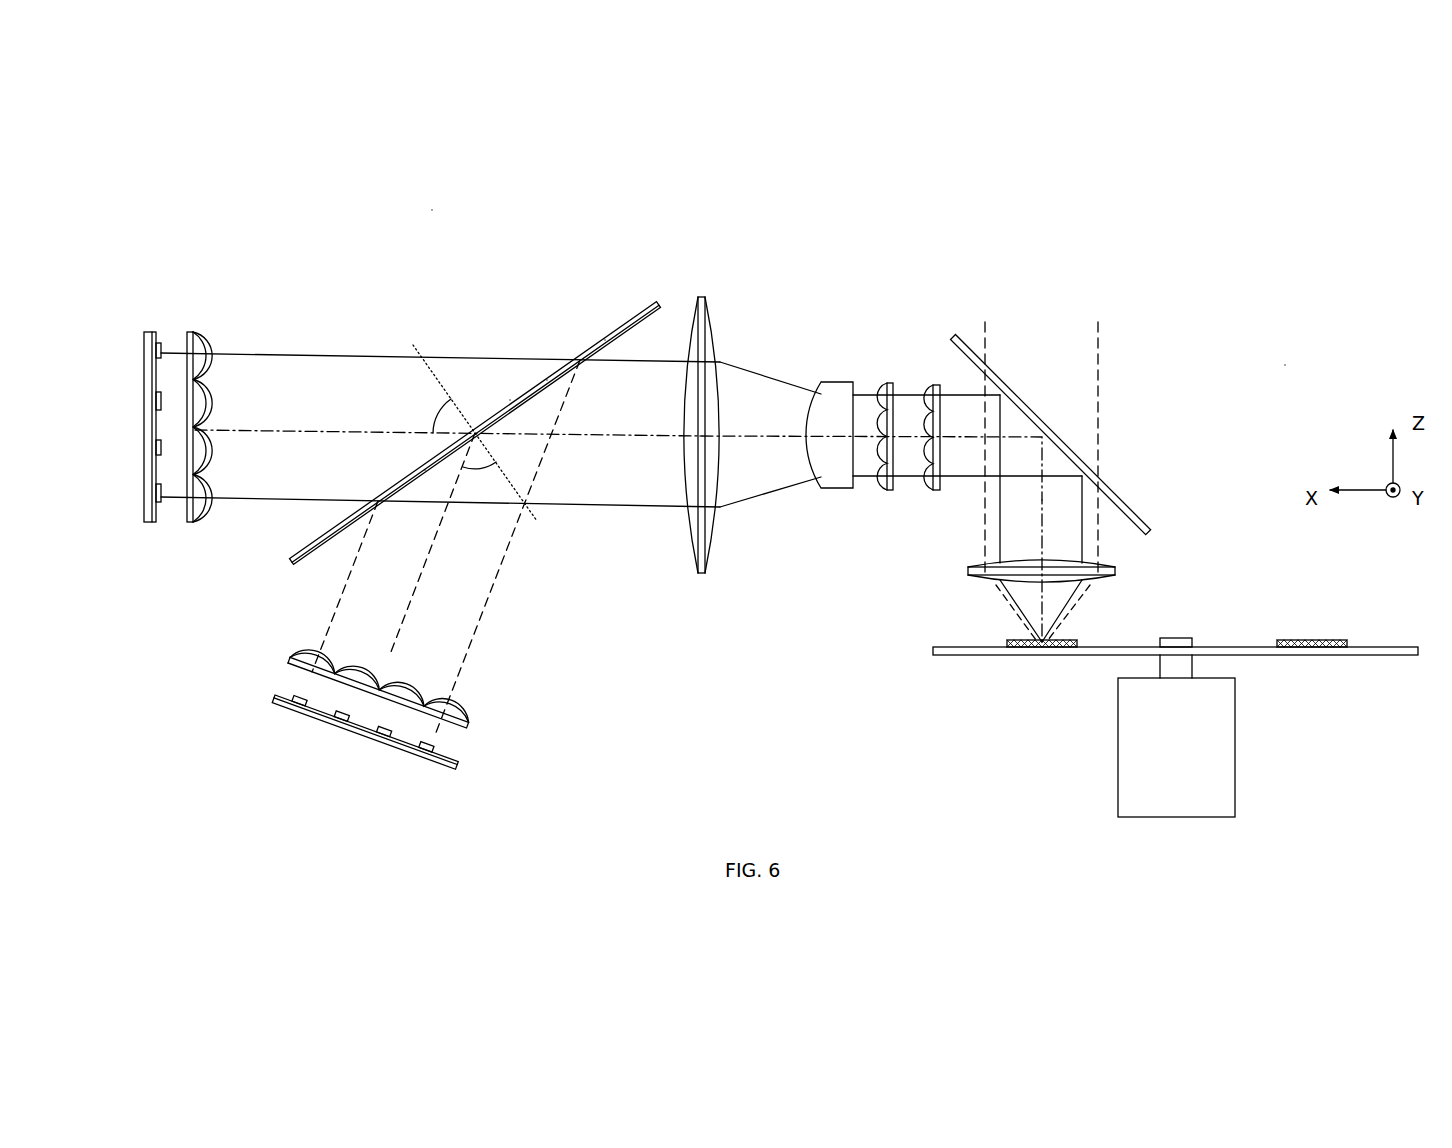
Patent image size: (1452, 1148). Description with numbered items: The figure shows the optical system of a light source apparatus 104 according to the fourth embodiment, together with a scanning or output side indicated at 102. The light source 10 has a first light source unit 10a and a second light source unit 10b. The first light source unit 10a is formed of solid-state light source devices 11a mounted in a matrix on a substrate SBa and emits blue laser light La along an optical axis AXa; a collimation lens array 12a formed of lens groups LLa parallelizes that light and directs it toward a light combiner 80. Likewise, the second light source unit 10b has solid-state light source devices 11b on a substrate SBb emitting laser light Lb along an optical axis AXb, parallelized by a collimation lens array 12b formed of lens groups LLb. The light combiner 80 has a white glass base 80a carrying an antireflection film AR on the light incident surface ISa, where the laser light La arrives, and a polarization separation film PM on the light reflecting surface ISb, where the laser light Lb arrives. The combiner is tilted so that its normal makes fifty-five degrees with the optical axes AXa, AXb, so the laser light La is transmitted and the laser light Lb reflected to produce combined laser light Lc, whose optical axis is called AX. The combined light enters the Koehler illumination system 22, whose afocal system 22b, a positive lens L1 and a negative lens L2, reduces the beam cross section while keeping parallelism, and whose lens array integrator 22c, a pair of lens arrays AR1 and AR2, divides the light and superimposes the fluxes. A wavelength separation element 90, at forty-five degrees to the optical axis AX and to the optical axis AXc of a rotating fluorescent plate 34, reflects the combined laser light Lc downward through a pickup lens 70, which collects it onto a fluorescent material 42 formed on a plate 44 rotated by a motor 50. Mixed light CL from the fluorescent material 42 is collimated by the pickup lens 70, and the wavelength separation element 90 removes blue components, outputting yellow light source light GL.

The light source 10 is at (266, 243).
The first light source unit 10a is at (152, 318).
The second light source unit 10b is at (268, 692).
The solid-state light source devices 11a is at (158, 443).
The solid-state light source devices 11b is at (403, 727).
The collimation lens array 12a is at (200, 330).
The collimation lens array 12b is at (283, 650).
The Koehler illumination system 22 is at (787, 290).
The afocal system 22b is at (857, 607).
The lens array integrator 22c is at (938, 313).
The rotating fluorescent plate 34 is at (1198, 616).
The fluorescent material 42 is at (1070, 640).
The plate 44 is at (1383, 652).
The motor 50 is at (1215, 774).
The pickup lens 70 is at (995, 578).
The light combiner 80 is at (580, 318).
The base 80a is at (605, 340).
The wavelength separation element 90 is at (1105, 492).
The scanning unit 102 is at (1285, 362).
The light source apparatus 104 is at (432, 208).
The laser light La is at (312, 352).
The laser light Lb is at (483, 627).
The combined laser light Lc is at (628, 493).
The optical axis AXa is at (258, 428).
The optical axis AXb is at (437, 543).
The optical axis AXc is at (1040, 495).
The optical axis AX is at (750, 440).
The light incident surface ISa is at (547, 380).
The light reflecting surface ISb is at (425, 470).
The polarization separation film PM is at (453, 466).
The antireflection film AR is at (510, 400).
The lens array AR1 is at (890, 383).
The lens array AR2 is at (935, 386).
The positive lens L1 is at (710, 340).
The negative lens L2 is at (840, 386).
The light source light GL is at (1100, 358).
The mixed light CL is at (1100, 548).
The lens groups LLa is at (213, 497).
The lens groups LLb is at (420, 682).
The substrate SBa is at (145, 523).
The substrate SBb is at (455, 765).